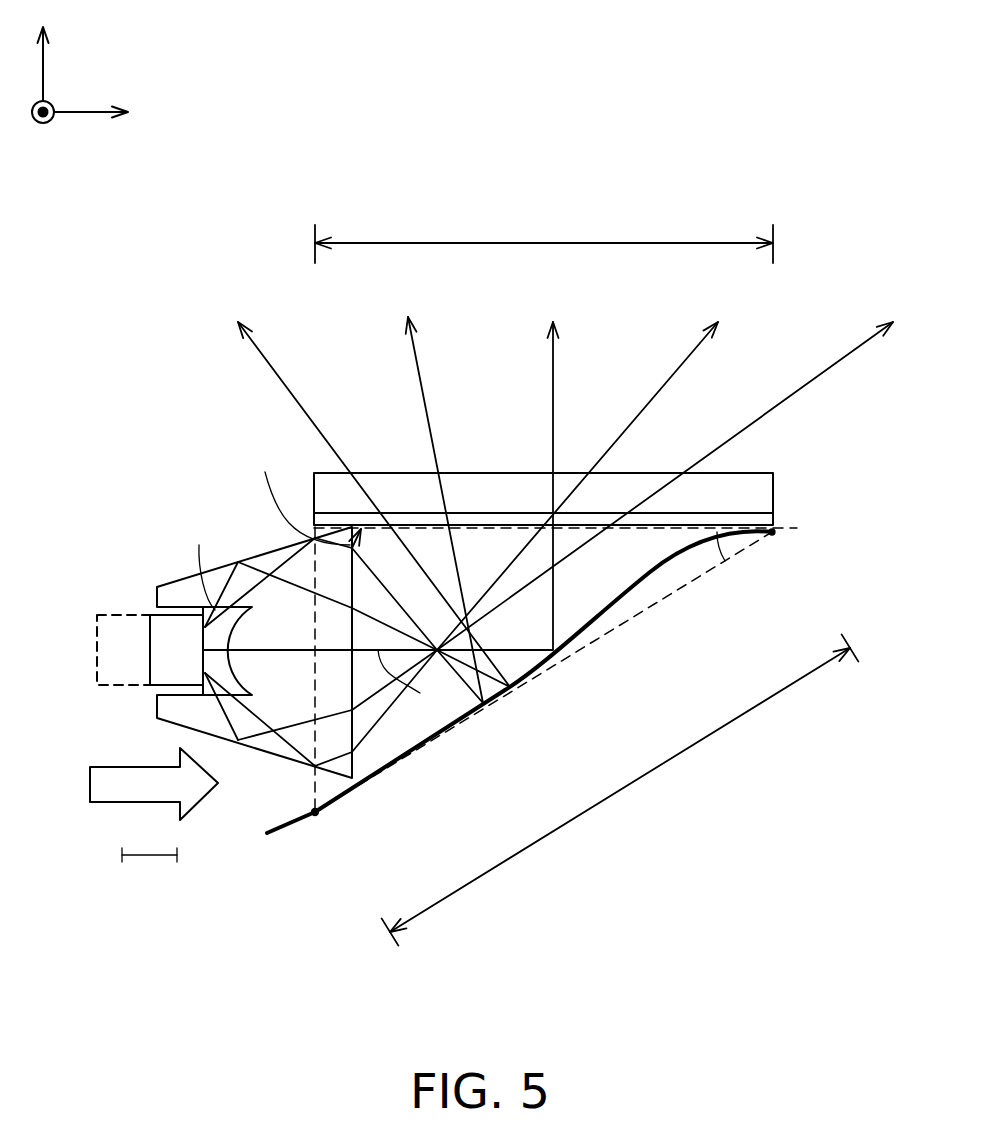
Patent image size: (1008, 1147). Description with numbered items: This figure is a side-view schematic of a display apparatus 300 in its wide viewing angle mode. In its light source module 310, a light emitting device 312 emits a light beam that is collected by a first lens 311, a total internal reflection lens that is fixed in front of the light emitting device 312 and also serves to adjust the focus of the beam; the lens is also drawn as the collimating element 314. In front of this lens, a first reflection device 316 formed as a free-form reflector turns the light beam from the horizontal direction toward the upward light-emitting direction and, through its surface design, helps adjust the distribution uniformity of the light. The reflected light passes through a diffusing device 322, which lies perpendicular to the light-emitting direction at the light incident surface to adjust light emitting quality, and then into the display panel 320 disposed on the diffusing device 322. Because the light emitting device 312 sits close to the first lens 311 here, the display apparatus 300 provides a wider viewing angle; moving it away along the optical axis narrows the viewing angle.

The display apparatus 300 is at (461, 473).
The light source module 310 is at (113, 210).
The first lens 311 is at (254, 712).
The light emitting device 312 is at (172, 628).
The collimating lens 314 is at (267, 757).
The first reflection device 316 is at (447, 737).
The display panel 320 is at (778, 490).
The diffusing device 322 is at (778, 520).